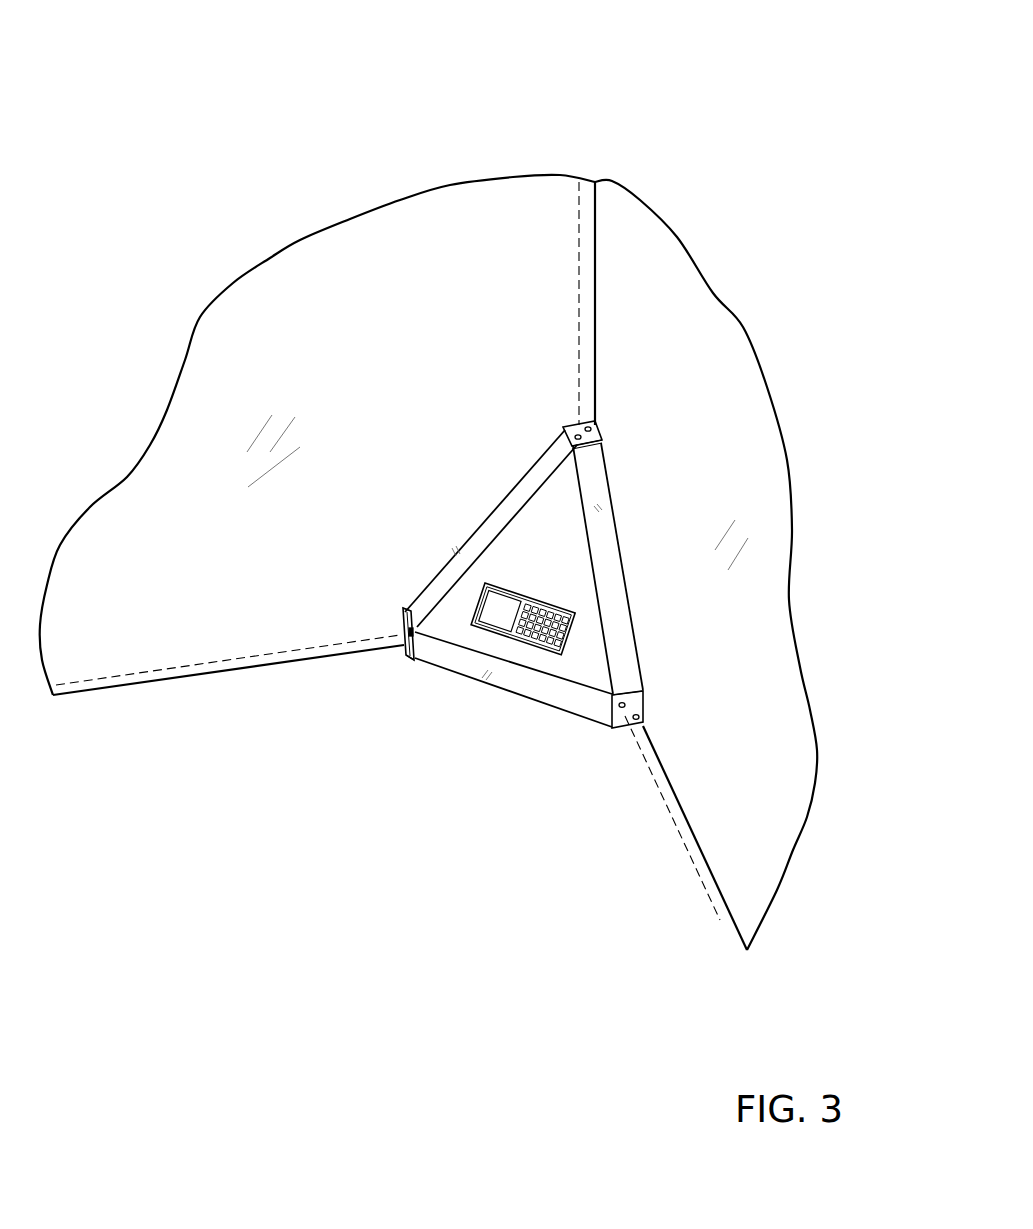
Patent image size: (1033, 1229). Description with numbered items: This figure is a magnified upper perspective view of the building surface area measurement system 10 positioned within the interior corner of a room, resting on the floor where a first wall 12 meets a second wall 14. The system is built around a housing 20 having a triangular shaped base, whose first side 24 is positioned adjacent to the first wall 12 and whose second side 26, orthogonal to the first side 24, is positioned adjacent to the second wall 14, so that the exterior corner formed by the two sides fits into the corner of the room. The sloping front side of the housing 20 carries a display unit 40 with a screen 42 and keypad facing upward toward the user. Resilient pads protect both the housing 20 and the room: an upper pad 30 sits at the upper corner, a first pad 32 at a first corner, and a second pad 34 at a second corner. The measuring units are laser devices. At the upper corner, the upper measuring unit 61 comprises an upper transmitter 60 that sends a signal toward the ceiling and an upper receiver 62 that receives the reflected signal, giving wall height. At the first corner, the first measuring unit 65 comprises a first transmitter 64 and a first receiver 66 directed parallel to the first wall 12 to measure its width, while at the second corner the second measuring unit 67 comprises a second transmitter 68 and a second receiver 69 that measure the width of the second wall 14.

The building surface area measurement system 10 is at (182, 92).
The first wall 12 is at (708, 357).
The second wall 14 is at (362, 278).
The housing 20 is at (437, 678).
The first side 24 is at (607, 493).
The second side 26 is at (515, 485).
The upper pad 30 is at (668, 399).
The first pad 32 is at (650, 724).
The second pad 34 is at (338, 640).
The electronic display unit 40 is at (458, 723).
The display screen 42 is at (492, 620).
The upper transmitter 60 is at (565, 427).
The upper measuring unit 61 is at (610, 430).
The upper receiver 62 is at (595, 423).
The first transmitter 64 is at (625, 705).
The first measuring unit 65 is at (627, 680).
The first receiver 66 is at (639, 717).
The second measuring unit 67 is at (393, 625).
The second transmitter 68 is at (414, 661).
The second receiver 69 is at (404, 657).